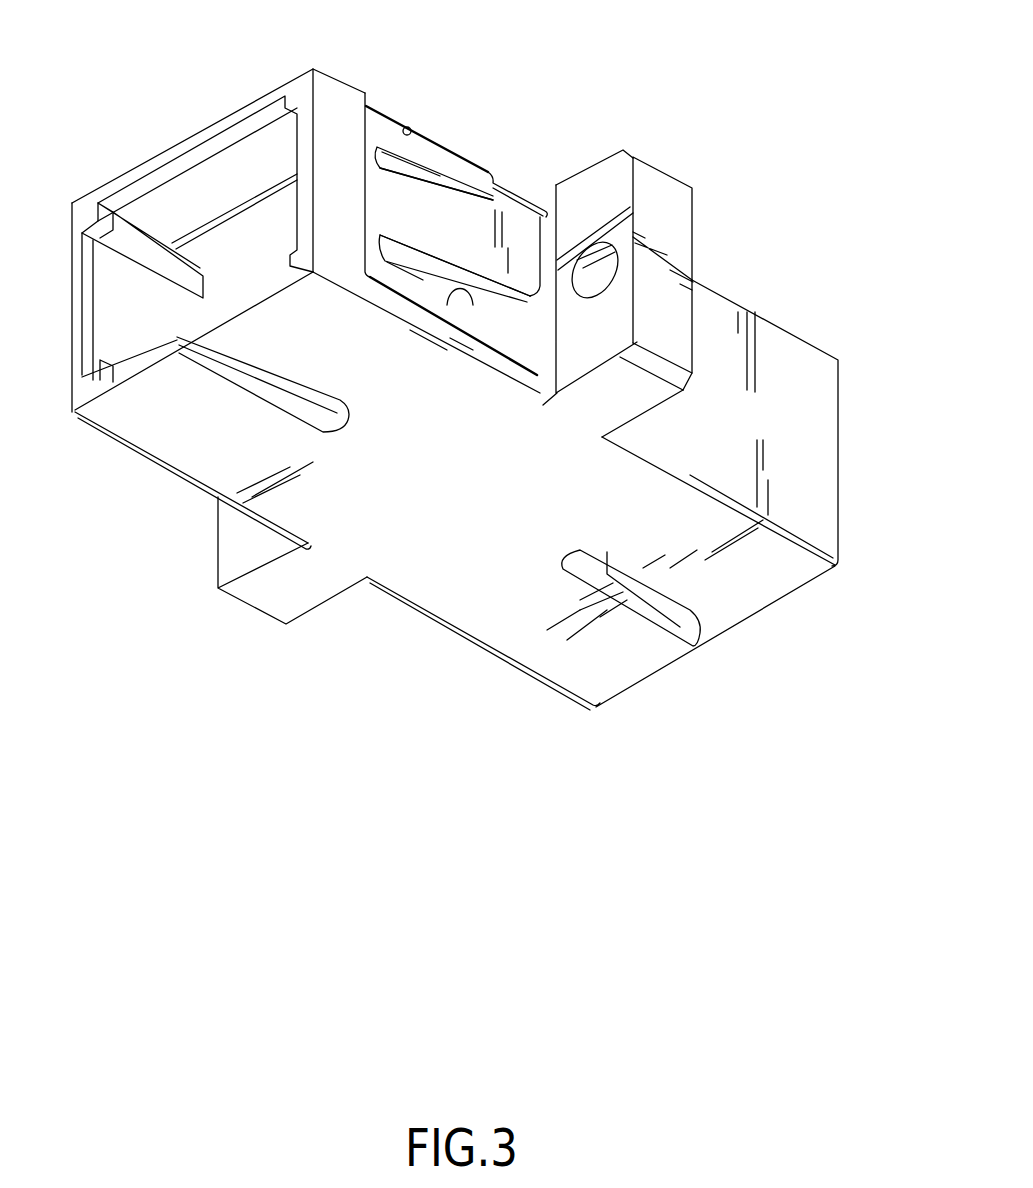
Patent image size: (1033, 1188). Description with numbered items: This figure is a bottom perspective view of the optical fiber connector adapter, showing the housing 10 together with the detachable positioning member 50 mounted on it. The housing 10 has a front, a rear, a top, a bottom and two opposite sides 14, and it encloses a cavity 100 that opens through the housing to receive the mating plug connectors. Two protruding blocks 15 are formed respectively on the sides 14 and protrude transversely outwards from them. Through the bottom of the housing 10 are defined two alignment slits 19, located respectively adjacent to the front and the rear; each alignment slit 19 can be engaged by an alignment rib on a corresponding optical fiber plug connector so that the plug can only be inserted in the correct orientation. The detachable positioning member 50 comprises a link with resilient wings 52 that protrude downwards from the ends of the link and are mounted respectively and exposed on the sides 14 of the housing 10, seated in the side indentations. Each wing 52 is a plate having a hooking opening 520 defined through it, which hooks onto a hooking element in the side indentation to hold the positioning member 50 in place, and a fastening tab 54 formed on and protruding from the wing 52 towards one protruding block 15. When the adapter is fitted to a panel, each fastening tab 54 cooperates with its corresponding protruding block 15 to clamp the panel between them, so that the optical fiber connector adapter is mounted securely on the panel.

The housing 10 is at (793, 312).
The sides 14 is at (826, 448).
The protruding block 15 is at (648, 184).
The alignment slit 19 is at (237, 378).
The detachable positioning member 50 is at (450, 114).
The wing 52 is at (543, 220).
The fastening tab 54 is at (473, 218).
The cavity 100 is at (218, 173).
The hooking opening 520 is at (474, 305).